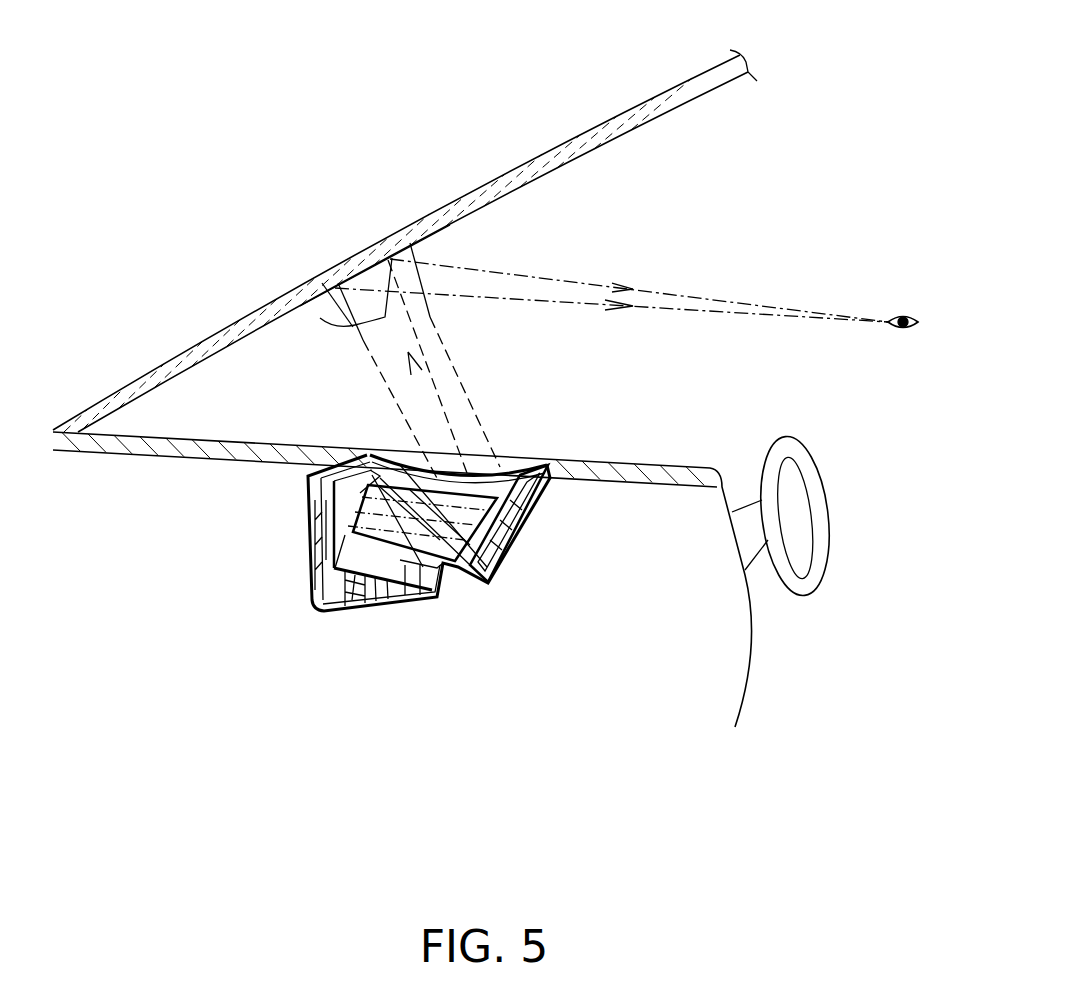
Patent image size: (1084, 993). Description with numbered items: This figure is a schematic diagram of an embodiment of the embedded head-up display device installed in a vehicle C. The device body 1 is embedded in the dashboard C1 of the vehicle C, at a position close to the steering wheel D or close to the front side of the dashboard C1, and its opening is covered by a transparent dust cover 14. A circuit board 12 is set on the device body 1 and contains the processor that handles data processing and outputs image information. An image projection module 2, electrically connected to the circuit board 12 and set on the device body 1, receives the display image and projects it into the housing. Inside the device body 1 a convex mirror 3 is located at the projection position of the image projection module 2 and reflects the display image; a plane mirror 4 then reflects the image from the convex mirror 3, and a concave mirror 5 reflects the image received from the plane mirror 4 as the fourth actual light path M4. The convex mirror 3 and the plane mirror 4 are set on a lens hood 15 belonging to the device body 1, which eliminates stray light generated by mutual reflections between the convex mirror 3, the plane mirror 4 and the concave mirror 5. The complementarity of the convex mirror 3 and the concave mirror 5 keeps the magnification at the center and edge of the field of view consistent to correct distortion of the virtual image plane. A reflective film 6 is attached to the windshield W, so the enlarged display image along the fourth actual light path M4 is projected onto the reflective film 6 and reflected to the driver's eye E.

The device body 1 is at (315, 578).
The image projection module 2 is at (385, 607).
The convex mirror 3 is at (438, 580).
The plane mirror 4 is at (310, 513).
The concave mirror 5 is at (517, 542).
The reflective film 6 is at (410, 250).
The circuit board 12 is at (317, 493).
The transparent dust cover 14 is at (488, 460).
The lens hood 15 is at (406, 455).
The windshield W is at (468, 193).
The vehicle C is at (125, 367).
The dashboard C1 is at (625, 465).
The steering wheel D is at (815, 472).
The driver's eye E is at (903, 312).
The fourth actual light path M4 is at (312, 318).